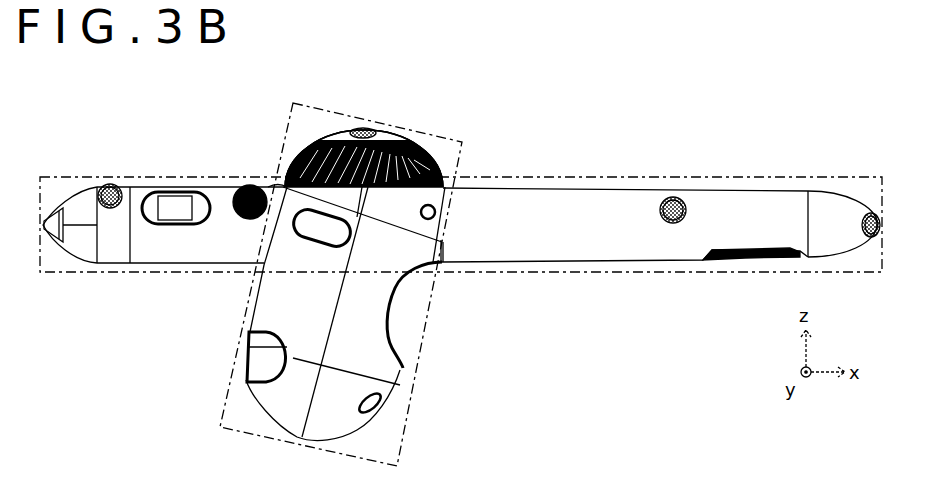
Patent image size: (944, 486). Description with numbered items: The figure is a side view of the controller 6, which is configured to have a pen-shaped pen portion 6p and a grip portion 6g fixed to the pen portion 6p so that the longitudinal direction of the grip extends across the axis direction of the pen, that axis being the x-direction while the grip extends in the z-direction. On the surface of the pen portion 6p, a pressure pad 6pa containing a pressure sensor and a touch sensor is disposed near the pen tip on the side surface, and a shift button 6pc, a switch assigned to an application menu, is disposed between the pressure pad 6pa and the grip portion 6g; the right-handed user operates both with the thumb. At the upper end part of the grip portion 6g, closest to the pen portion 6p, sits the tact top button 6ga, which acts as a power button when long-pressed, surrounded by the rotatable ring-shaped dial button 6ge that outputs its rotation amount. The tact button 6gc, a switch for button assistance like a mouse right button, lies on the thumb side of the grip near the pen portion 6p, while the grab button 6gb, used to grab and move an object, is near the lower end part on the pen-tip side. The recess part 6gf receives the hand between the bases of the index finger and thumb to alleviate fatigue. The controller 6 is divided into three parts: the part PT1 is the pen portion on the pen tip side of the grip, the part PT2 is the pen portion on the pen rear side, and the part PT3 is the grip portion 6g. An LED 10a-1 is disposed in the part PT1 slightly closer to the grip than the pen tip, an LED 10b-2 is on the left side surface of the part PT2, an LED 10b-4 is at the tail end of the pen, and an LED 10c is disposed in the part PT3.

The controller 6 is at (483, 200).
The pen portion 6p is at (523, 198).
The pressure pad 6pa is at (177, 202).
The shift button 6pc is at (243, 218).
The grip portion 6g is at (263, 308).
The tact top button 6ga is at (390, 137).
The grab button 6gb is at (247, 362).
The tact button 6gc is at (272, 186).
The dial button 6ge is at (312, 145).
The recess part 6gf is at (400, 357).
The LED 10a-1 is at (110, 184).
The LED 10b-2 is at (673, 197).
The LED 10b-4 is at (870, 212).
The LED 10c is at (362, 128).
The part PT1 is at (212, 177).
The part PT2 is at (597, 177).
The part PT3 is at (457, 126).